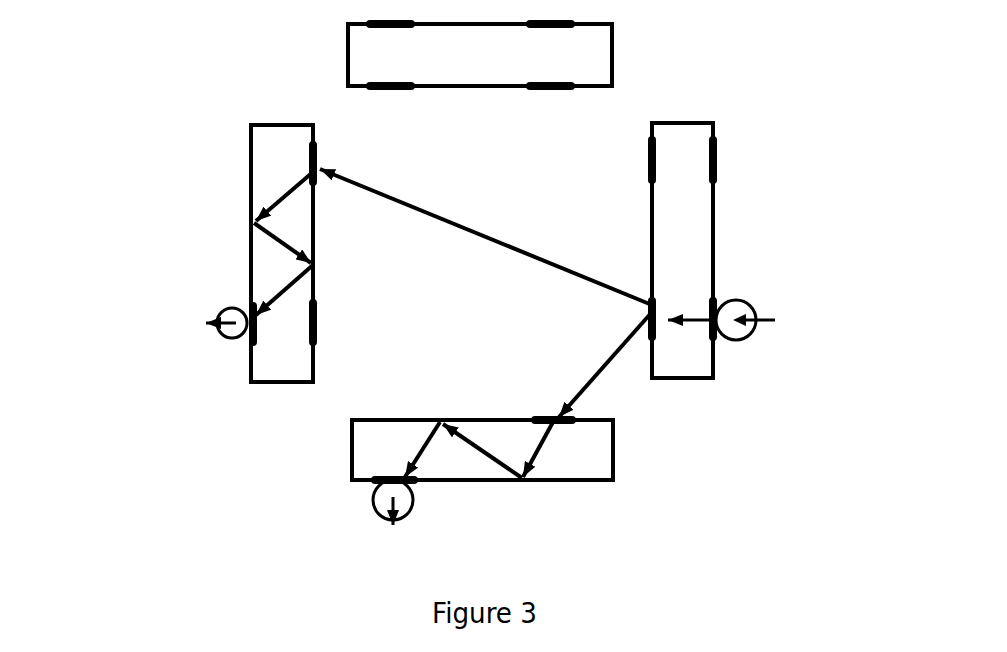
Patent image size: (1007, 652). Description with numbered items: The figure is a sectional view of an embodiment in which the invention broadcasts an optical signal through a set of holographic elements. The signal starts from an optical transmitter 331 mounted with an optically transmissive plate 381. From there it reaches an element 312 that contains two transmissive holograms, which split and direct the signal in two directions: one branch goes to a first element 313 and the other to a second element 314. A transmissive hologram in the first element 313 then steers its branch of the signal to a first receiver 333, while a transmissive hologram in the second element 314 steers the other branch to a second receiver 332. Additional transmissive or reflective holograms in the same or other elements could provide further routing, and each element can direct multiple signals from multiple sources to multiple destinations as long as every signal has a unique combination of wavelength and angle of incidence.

The optically transmissive plate 381 is at (713, 123).
The element with two transmissive holograms 312 is at (653, 300).
The first element 313 is at (312, 143).
The second element 314 is at (590, 423).
The optical transmitter 331 is at (735, 343).
The second receiver 332 is at (413, 500).
The first receiver 333 is at (237, 343).